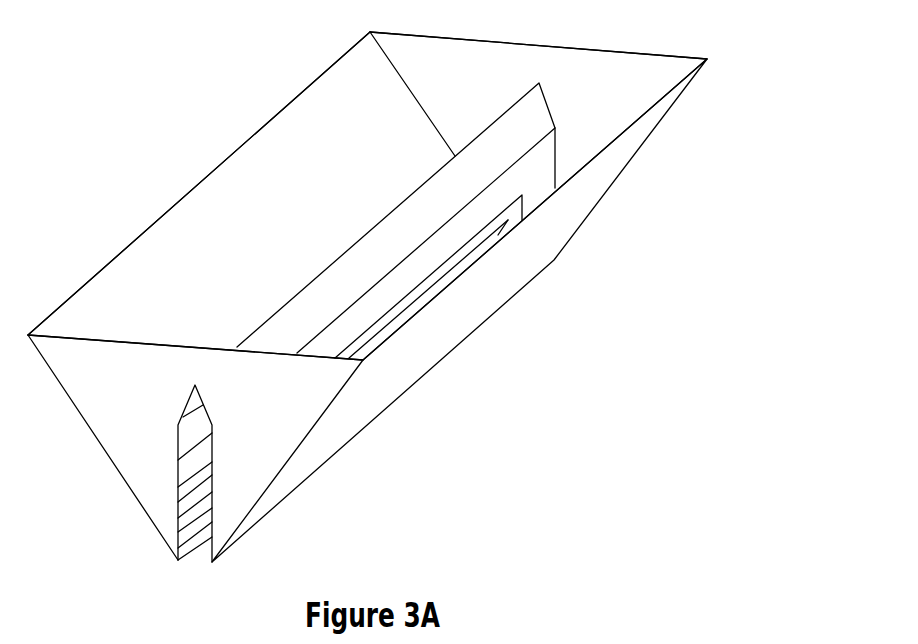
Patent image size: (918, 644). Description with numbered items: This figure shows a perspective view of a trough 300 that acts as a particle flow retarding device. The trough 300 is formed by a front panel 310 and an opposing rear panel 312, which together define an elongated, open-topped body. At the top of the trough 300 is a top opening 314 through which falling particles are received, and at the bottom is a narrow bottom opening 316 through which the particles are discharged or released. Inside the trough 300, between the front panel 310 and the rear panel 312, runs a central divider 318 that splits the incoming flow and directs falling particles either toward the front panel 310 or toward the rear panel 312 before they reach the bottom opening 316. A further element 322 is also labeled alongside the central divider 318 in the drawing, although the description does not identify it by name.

The trough 300 is at (189, 161).
The front panel 310 is at (114, 257).
The rear panel 312 is at (628, 161).
The top opening 314 is at (337, 108).
The bottom opening 316 is at (197, 558).
The central divider 318 is at (514, 101).
The channel member 322 is at (538, 155).